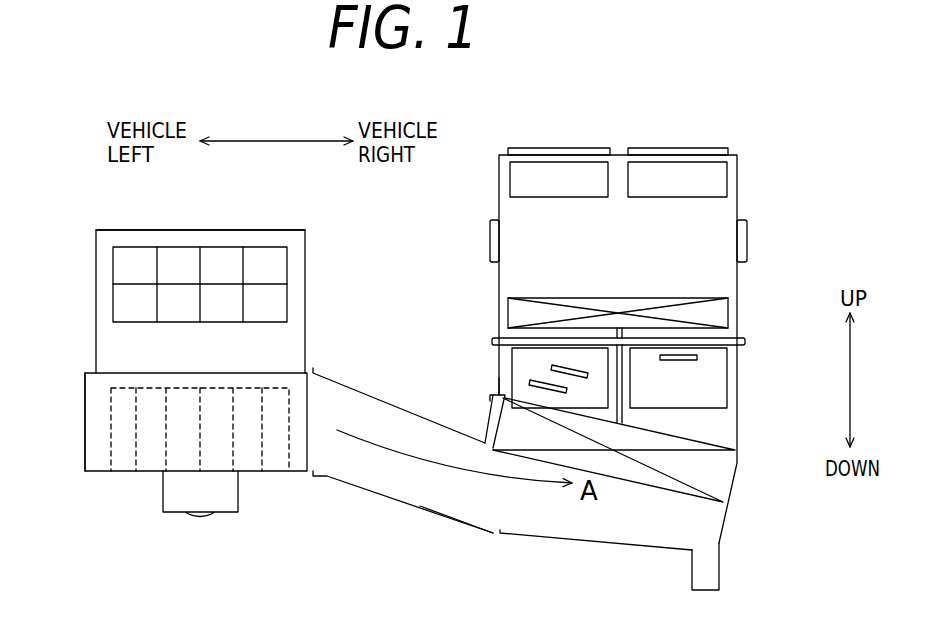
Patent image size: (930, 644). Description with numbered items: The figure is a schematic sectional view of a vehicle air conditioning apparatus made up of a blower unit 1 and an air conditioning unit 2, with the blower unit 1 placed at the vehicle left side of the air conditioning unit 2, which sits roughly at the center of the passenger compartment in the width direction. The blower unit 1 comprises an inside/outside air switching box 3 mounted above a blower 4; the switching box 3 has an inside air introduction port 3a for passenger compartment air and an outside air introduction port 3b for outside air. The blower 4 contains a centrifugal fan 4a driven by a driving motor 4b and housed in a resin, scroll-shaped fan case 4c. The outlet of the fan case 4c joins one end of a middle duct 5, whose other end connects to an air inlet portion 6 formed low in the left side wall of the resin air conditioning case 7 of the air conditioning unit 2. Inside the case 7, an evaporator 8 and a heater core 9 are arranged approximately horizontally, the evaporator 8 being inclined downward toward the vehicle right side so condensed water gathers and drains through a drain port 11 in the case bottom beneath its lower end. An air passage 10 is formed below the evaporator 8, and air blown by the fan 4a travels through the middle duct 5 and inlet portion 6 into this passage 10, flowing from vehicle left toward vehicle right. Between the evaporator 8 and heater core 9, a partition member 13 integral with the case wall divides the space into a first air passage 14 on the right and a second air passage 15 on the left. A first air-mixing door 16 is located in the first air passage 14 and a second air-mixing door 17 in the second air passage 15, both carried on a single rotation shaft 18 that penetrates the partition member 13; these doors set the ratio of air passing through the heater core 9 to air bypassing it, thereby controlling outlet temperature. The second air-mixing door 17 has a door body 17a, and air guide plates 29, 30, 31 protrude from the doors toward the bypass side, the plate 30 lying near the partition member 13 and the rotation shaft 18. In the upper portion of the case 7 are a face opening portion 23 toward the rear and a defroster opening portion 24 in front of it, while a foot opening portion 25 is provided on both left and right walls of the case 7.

The blower unit 1 is at (68, 343).
The air conditioning unit 2 is at (753, 345).
The inside/outside air switching box 3 is at (96, 265).
The inside air introduction port 3a is at (215, 263).
The outside air introduction port 3b is at (125, 230).
The blower 4 is at (85, 440).
The centrifugal fan 4a is at (136, 432).
The driving motor 4b is at (173, 495).
The fan case 4c is at (85, 418).
The middle duct 5 is at (357, 483).
The air inlet portion 6 is at (508, 498).
The air conditioning case 7 is at (499, 286).
The evaporator 8 is at (715, 475).
The heater core 9 is at (717, 313).
The air passage 10 is at (573, 500).
The drain port 11 is at (707, 577).
The partition member 13 is at (623, 380).
The first air passage 14 is at (707, 427).
The second air passage 15 is at (498, 386).
The first air-mixing door 16 is at (710, 400).
The second air-mixing door 17 is at (510, 368).
The door body 17a is at (495, 402).
The rotation shaft 18 is at (718, 340).
The face opening portion 23 is at (510, 178).
The defroster opening portion 24 is at (560, 148).
The foot opening portion 25 is at (490, 238).
The air guide plate 29 is at (700, 357).
The air guide plate 30 is at (565, 366).
The air guide plate 31 is at (548, 386).